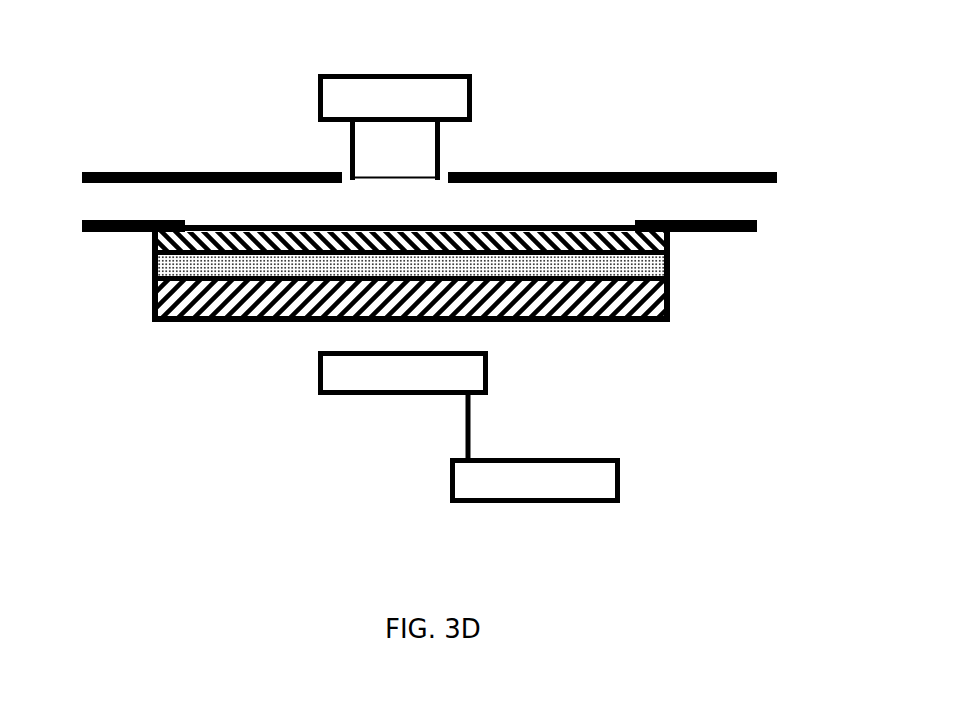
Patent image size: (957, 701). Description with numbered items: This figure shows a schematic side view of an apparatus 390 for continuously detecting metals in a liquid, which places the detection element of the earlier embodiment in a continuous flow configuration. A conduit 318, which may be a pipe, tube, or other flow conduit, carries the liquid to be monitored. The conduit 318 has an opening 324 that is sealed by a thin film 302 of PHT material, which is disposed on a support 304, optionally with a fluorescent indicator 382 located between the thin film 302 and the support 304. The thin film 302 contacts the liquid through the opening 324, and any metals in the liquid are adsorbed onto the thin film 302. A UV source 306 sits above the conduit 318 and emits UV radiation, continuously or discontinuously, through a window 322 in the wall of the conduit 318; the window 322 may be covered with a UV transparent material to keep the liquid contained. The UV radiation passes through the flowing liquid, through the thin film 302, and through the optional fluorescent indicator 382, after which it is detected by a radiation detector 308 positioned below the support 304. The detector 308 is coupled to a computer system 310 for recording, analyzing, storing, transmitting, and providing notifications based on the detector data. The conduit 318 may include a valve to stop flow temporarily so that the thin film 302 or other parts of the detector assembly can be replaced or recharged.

The apparatus for continuously detecting metals in a liquid 390 is at (493, 43).
The UV source 306 is at (472, 100).
The window 322 is at (340, 162).
The conduit 318 is at (673, 170).
The opening 324 is at (152, 257).
The thin film 302 is at (672, 245).
The fluorescent indicator 382 is at (672, 260).
The support 304 is at (672, 293).
The radiation detector 308 is at (488, 377).
The computer system 310 is at (535, 448).